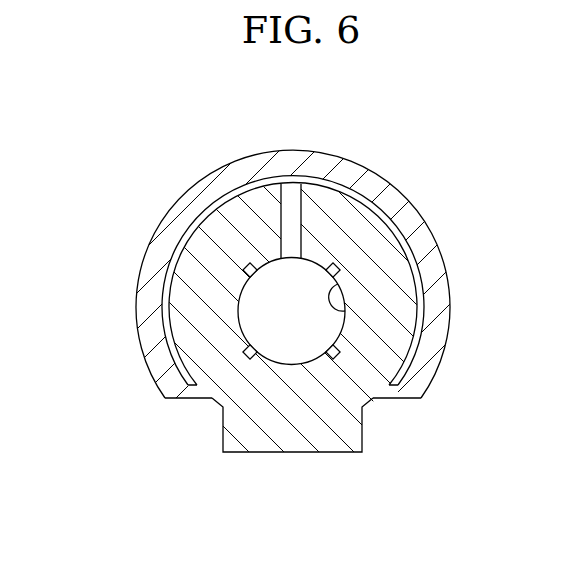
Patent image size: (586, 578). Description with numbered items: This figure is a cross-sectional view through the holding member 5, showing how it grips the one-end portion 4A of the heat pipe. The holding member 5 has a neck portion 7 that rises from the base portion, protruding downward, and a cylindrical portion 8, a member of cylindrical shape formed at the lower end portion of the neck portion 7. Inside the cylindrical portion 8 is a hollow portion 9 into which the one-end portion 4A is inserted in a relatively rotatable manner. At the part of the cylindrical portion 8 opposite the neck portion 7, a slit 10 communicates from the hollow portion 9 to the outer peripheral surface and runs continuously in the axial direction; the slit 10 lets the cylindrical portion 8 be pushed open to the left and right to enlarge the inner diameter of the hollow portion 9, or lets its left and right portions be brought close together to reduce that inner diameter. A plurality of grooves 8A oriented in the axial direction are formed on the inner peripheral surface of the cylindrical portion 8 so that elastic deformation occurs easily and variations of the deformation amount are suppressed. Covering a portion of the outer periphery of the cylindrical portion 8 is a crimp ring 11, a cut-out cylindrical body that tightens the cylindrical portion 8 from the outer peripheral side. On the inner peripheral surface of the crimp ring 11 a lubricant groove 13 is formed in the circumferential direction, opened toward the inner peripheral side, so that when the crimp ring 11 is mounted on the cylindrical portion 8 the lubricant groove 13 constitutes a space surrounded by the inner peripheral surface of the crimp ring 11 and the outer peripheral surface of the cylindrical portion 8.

The holding member 5 is at (443, 141).
The neck portion 7 is at (283, 437).
The cylindrical portion 8 is at (369, 381).
The grooves 8A is at (332, 355).
The hollow portion 9 is at (347, 310).
The slit 10 is at (197, 193).
The crimp ring 11 is at (134, 284).
The lubricant groove 13 is at (377, 235).
The one-end portion of the heat pipe 4A is at (310, 323).